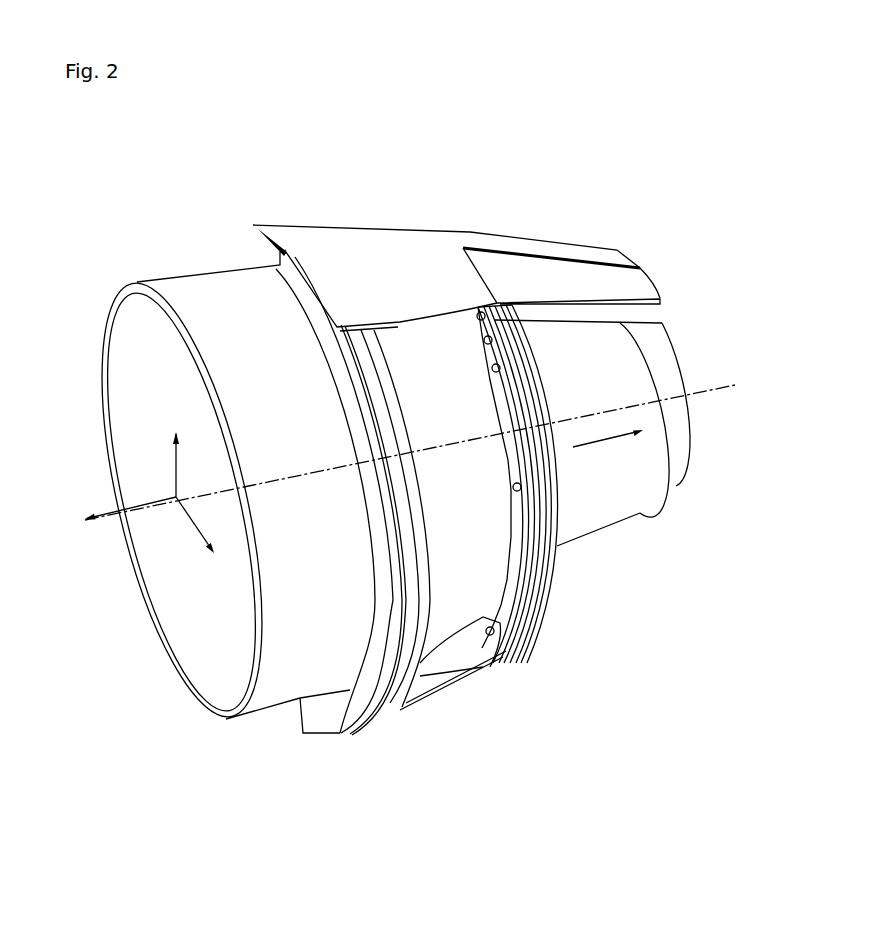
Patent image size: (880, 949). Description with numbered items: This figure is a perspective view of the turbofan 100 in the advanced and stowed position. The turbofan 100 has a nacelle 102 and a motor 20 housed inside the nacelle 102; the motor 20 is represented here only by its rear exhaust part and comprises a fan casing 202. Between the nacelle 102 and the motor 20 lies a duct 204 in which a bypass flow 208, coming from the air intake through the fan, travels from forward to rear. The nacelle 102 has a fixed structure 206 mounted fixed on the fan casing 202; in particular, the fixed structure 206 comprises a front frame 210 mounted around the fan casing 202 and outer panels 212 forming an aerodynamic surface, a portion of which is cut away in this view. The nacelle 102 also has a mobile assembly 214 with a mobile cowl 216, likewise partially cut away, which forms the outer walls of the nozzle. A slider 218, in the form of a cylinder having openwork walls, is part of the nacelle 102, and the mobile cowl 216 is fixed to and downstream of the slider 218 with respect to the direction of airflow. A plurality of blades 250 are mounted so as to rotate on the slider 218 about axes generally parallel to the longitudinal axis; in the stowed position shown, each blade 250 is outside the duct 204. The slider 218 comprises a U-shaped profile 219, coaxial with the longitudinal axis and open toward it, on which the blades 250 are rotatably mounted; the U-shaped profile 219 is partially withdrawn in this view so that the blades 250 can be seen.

The turbofan 100 is at (612, 189).
The nacelle 102 is at (487, 201).
The motor 20 is at (680, 474).
The fan casing 202 is at (183, 683).
The duct 204 is at (602, 374).
The fixed structure 206 is at (330, 768).
The bypass flow 208 is at (608, 456).
The front frame 210 is at (317, 713).
The outer panels 212 is at (338, 248).
The mobile assembly 214 is at (470, 775).
The mobile cowl 216 is at (638, 286).
The slider 218 is at (572, 689).
The U-shaped profile 219 is at (510, 662).
The blades 250 is at (513, 560).